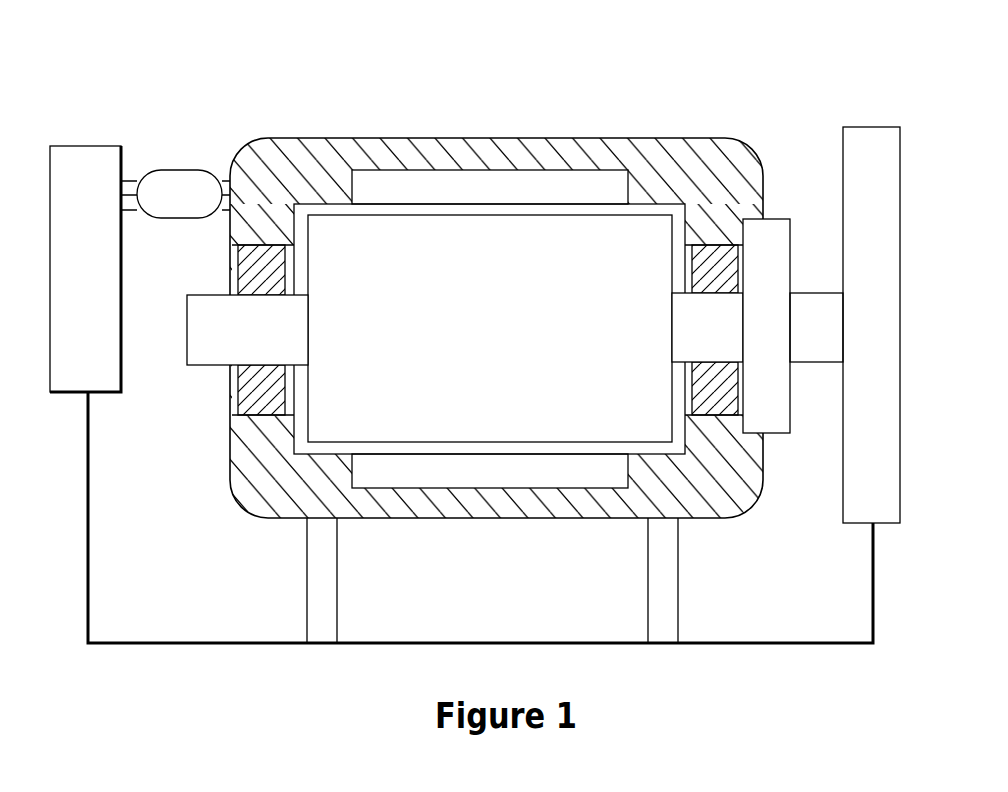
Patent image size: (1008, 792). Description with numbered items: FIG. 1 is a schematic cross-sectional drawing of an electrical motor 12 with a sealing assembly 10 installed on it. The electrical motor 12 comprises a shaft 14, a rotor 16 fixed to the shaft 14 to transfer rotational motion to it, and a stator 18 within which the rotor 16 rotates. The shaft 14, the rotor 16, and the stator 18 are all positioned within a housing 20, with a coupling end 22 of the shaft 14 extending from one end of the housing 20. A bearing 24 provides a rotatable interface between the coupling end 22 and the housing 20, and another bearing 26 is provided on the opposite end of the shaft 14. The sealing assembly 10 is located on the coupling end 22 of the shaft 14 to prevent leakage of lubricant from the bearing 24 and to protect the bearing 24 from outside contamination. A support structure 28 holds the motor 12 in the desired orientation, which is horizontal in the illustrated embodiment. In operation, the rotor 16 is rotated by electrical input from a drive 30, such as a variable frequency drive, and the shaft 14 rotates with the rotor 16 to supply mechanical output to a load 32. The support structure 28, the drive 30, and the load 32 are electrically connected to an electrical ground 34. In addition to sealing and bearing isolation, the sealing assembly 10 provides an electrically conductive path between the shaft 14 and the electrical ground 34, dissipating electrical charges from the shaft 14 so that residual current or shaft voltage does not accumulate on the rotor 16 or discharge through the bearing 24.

The sealing assembly 10 is at (777, 425).
The electrical motor 12 is at (676, 104).
The shaft 14 is at (222, 307).
The rotor 16 is at (340, 257).
The stator 18 is at (493, 187).
The housing 20 is at (573, 158).
The coupling end 22 is at (815, 312).
The bearing 24 is at (712, 260).
The bearing 26 is at (258, 260).
The support structure 28 is at (662, 578).
The drive 30 is at (86, 178).
The load 32 is at (855, 152).
The electrical ground 34 is at (548, 645).